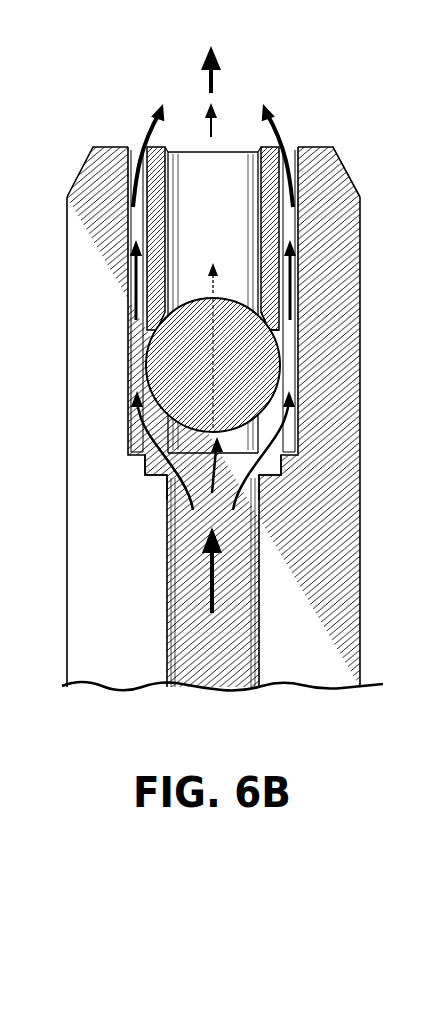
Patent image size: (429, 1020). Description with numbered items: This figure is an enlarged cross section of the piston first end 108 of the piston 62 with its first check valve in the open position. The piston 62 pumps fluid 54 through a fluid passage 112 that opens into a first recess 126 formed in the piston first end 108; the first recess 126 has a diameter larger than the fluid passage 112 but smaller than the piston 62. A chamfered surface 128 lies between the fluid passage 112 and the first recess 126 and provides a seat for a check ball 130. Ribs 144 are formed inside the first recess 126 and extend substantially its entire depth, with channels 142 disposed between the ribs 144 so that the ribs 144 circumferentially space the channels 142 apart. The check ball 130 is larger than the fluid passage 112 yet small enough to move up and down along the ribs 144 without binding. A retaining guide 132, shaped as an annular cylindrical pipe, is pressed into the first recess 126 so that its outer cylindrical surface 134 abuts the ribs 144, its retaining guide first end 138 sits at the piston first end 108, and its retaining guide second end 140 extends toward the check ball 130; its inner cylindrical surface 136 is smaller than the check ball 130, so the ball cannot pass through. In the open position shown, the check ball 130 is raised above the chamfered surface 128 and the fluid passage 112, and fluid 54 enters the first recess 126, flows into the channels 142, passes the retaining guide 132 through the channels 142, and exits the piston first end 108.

The fluid 54 is at (208, 600).
The piston 62 is at (340, 648).
The piston first end 108 is at (313, 160).
The fluid passage 112 is at (227, 657).
The first recess 126 is at (267, 458).
The chamfered surface 128 is at (260, 477).
The check ball 130 is at (185, 365).
The retaining guide 132 is at (268, 227).
The outer cylindrical surface 134 is at (143, 232).
The inner cylindrical surface 136 is at (260, 265).
The retaining guide first end 138 is at (157, 150).
The retaining guide second end 140 is at (282, 327).
The channels 142 is at (130, 445).
The ribs 144 is at (148, 385).